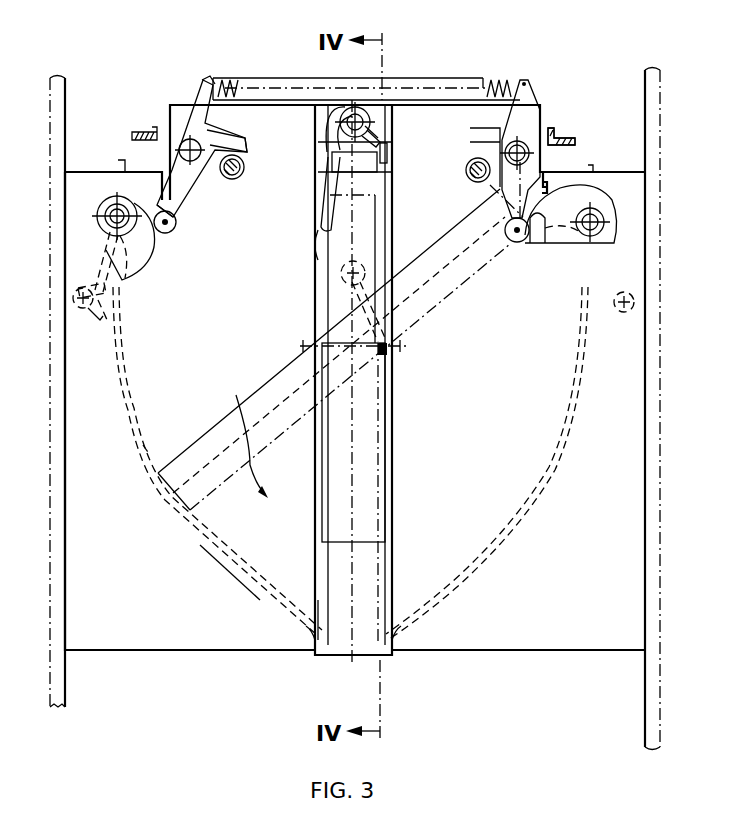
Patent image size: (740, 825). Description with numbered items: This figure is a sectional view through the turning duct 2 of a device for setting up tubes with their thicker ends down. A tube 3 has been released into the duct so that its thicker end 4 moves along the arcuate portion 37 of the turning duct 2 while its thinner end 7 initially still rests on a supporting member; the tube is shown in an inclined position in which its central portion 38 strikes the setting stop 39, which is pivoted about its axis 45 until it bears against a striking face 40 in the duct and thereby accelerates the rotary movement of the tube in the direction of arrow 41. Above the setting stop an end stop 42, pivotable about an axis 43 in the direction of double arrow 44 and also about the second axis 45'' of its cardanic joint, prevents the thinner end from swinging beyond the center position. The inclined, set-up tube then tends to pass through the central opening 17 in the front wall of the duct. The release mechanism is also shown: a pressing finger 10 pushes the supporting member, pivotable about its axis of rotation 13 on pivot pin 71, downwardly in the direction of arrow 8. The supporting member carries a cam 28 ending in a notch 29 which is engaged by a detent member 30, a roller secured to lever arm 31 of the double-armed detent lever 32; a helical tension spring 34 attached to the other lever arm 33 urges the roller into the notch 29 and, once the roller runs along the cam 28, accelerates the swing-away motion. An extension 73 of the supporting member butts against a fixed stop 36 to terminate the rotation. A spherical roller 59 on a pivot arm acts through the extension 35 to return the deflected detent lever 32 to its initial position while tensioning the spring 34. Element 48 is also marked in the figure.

The turning duct 2 is at (258, 538).
The tube 3 is at (370, 568).
The thicker end 4 is at (200, 537).
The thinner end 7 is at (382, 212).
The arrow 8 is at (148, 278).
The pressing finger 10 is at (560, 135).
The axis of rotation 13 is at (199, 155).
The central opening 17 is at (322, 593).
The cam 28 is at (563, 190).
The notch 29 is at (547, 217).
The detent member 30 is at (488, 257).
The lever arm 31 is at (183, 196).
The detent lever 32 is at (178, 122).
The lever arm 33 is at (207, 95).
The tension spring 34 is at (262, 80).
The extension 35 is at (245, 145).
The fixed stop 36 is at (93, 269).
The arcuate portion 37 is at (140, 452).
The central portion 38 is at (332, 328).
The setting stop 39 is at (408, 320).
The striking face 40 is at (388, 388).
The arrow 41 is at (245, 434).
The end stop 42 is at (388, 148).
The axis 43 is at (365, 112).
The double arrow 44 is at (324, 180).
The axis 45 is at (391, 256).
The second axis of cardanic joint 45'' is at (420, 86).
The recess 48 is at (320, 253).
The spherical roller 59 is at (472, 162).
The pivot pin 71 is at (112, 208).
The extension 73 is at (102, 337).